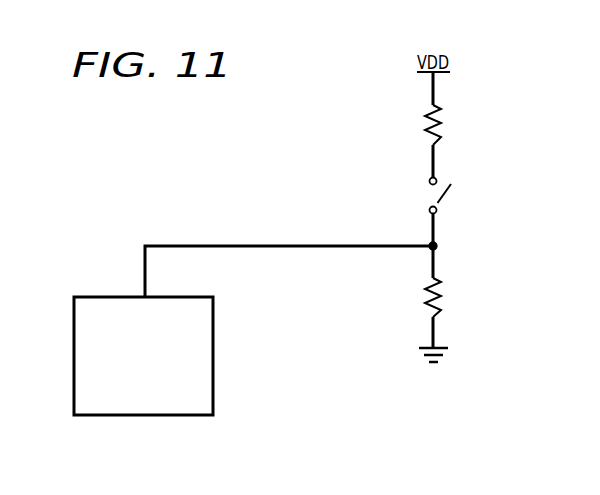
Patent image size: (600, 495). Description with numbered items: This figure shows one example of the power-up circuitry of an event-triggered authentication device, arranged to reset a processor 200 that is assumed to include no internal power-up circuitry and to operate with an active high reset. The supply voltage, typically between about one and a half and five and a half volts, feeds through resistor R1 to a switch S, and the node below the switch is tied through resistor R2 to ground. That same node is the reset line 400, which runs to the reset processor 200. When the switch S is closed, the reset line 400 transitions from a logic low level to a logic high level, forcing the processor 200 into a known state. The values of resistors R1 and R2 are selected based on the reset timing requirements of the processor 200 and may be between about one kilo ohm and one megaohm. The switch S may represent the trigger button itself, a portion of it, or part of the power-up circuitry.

The processor 200 is at (73, 354).
The reset line 400 is at (233, 245).
The resistor R1 is at (448, 125).
The resistor R2 is at (449, 297).
The switch S is at (446, 196).